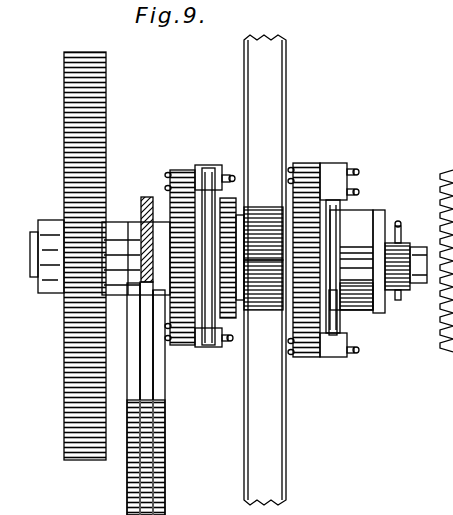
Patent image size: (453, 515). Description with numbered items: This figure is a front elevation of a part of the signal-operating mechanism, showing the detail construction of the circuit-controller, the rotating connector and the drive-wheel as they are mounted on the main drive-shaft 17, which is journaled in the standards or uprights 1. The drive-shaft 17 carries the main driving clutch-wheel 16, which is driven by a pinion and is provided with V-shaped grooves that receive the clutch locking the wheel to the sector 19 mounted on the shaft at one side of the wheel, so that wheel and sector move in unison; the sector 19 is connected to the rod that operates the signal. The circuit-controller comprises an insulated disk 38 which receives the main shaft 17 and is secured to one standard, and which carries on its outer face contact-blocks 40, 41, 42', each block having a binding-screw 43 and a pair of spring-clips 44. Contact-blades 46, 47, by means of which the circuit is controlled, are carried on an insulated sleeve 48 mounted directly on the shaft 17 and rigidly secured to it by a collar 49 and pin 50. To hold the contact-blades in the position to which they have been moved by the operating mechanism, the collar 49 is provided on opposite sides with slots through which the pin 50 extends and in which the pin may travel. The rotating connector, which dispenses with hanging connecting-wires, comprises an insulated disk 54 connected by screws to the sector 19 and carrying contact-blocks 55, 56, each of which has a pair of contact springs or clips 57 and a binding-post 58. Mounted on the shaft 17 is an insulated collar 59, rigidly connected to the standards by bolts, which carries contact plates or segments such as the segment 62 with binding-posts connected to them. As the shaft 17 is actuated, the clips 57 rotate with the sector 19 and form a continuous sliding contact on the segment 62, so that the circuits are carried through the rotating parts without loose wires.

The standards or uprights 1 is at (265, 270).
The main driving clutch-wheel 16 is at (106, 108).
The drive-shaft 17 is at (440, 300).
The sector 19 is at (143, 205).
The insulated disk 38 is at (308, 163).
The contact-block 40 is at (337, 292).
The contact-block 41 is at (336, 172).
The contact-block 42' is at (347, 359).
The binding-screw 43 is at (358, 350).
The spring-clips 44 is at (340, 330).
The contact-blade 46 is at (334, 222).
The contact-blade 47 is at (333, 345).
The insulated sleeve 48 is at (375, 216).
The collar 49 is at (405, 245).
The pin 50 is at (399, 222).
The insulated disk 54 is at (180, 172).
The contact-block 55 is at (210, 347).
The contact-block 56 is at (210, 165).
The contact springs or clips 57 is at (216, 195).
The binding-post 58 is at (235, 178).
The insulated collar 59 is at (263, 233).
The contact plate or segment 62 is at (263, 279).